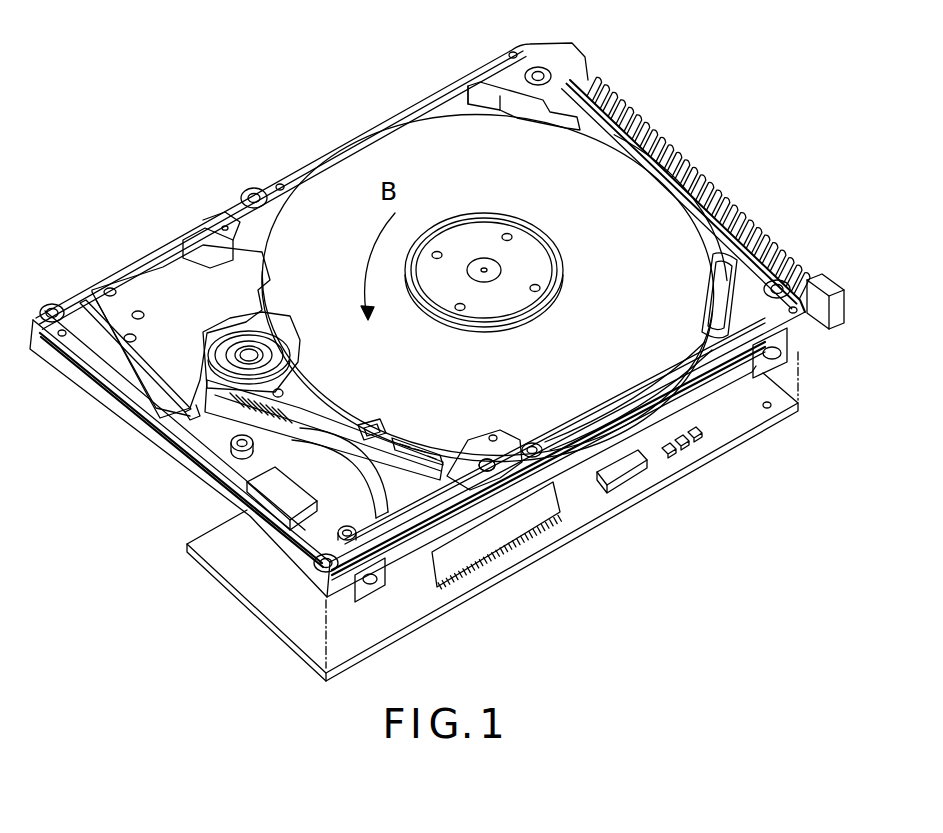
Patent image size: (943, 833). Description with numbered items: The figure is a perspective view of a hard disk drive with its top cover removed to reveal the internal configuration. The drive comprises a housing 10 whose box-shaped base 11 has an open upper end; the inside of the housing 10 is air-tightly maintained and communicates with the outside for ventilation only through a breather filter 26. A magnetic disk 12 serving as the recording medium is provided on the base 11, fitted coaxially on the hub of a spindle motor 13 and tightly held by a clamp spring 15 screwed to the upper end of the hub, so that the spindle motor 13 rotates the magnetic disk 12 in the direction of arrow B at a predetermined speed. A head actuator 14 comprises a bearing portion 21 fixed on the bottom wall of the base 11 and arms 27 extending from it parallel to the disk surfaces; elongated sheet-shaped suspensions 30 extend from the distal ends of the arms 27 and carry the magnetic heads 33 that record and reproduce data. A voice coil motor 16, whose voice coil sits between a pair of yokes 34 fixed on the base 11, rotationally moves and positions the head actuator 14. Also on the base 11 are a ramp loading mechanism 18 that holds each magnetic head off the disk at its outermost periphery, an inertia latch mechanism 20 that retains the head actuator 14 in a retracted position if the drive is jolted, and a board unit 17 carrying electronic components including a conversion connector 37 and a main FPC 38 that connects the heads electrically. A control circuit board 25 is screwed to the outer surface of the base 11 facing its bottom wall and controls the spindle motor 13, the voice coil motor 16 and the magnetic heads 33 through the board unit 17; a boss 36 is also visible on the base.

The housing 10 is at (470, 64).
The base 11 is at (400, 500).
The magnetic disk 12 is at (398, 143).
The spindle motor 13 is at (569, 268).
The head actuator 14 is at (294, 381).
The clamp spring 15 is at (517, 213).
The voice coil motor (VCM) 16 is at (147, 278).
The board unit 17 is at (233, 464).
The ramp loading mechanism 18 is at (491, 479).
The inertia latch mechanism 20 is at (206, 235).
The bearing portion 21 is at (270, 340).
The control circuit board 25 is at (600, 507).
The breather filter 26 is at (720, 320).
The arms 27 is at (353, 417).
The suspensions 30 is at (417, 443).
The magnetic heads 33 is at (445, 478).
The yokes 34 is at (135, 368).
The corner boss 36 is at (308, 535).
The conversion connector 37 is at (270, 488).
The main FPC 38 is at (328, 443).